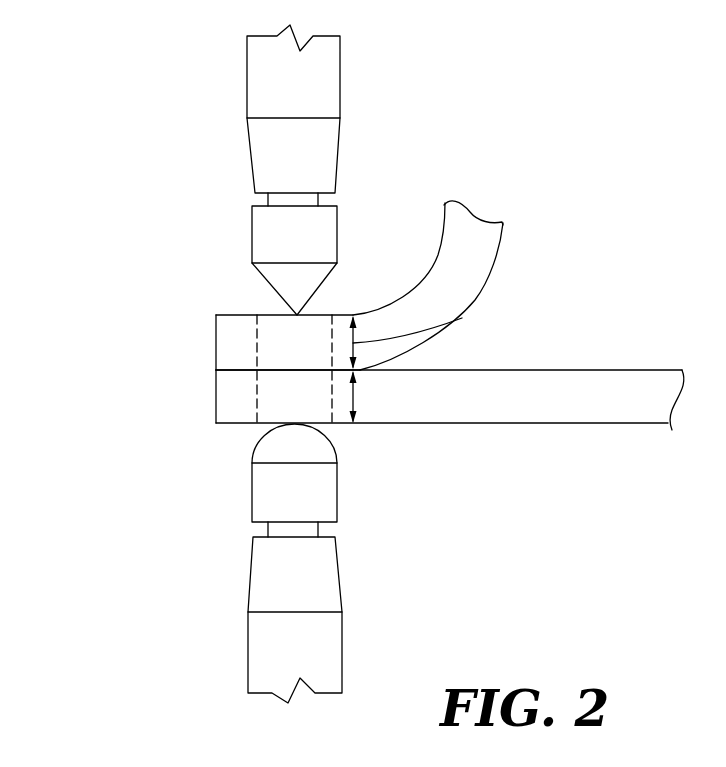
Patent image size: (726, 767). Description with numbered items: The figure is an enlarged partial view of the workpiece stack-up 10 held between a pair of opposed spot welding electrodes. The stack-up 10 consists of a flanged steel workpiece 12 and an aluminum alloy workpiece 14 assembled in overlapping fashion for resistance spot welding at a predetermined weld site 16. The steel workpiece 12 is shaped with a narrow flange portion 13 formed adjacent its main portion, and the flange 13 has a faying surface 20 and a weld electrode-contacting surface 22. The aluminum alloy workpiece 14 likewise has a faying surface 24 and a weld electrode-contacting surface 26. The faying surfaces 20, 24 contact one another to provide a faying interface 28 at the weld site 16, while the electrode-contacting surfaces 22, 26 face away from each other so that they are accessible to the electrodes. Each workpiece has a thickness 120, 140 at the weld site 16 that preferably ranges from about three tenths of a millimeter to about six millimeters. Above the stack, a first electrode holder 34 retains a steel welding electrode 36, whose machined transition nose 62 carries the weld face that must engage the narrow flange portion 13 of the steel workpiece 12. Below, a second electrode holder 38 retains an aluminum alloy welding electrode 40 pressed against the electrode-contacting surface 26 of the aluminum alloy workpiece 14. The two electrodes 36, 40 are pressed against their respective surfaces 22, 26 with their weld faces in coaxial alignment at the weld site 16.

The workpiece stack-up 10 is at (361, 332).
The steel workpiece 12 is at (362, 260).
The narrow flange portion 13 is at (228, 315).
The aluminum alloy workpiece 14 is at (450, 413).
The weld site 16 is at (262, 337).
The faying surface 20 is at (490, 274).
The weld electrode-contacting surface 22 is at (354, 311).
The faying surface 24 is at (561, 369).
The weld electrode-contacting surface 26 is at (527, 424).
The faying interface 28 is at (230, 368).
The first electrode holder 34 is at (320, 163).
The steel welding electrode 36 is at (242, 249).
The second electrode holder 38 is at (320, 567).
The aluminum alloy welding electrode 40 is at (277, 563).
The transition nose 62 is at (262, 288).
The thickness of steel workpiece 120 is at (463, 314).
The thickness of aluminum alloy workpiece 140 is at (365, 393).